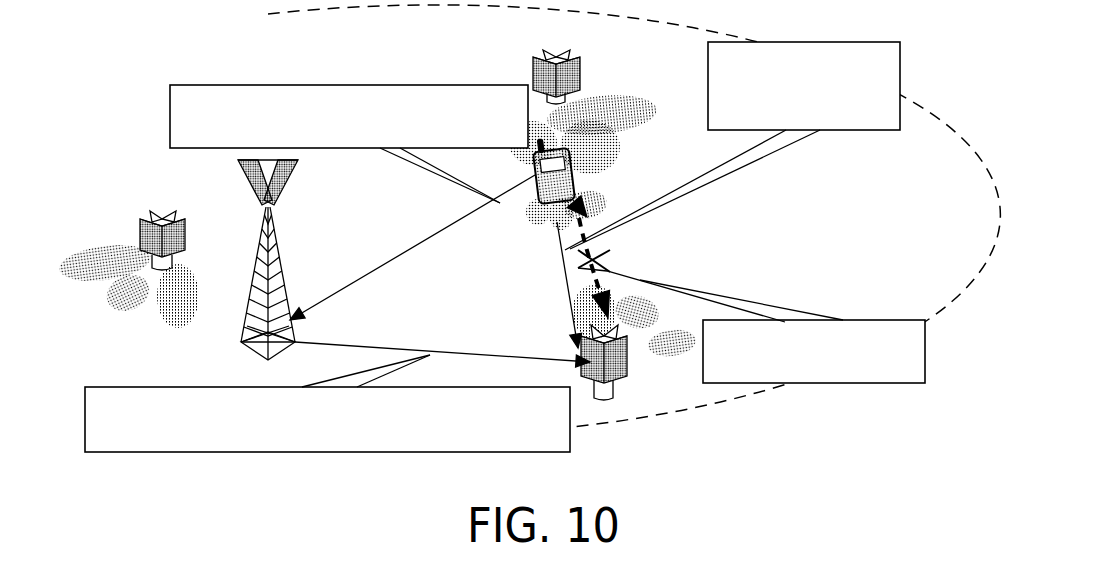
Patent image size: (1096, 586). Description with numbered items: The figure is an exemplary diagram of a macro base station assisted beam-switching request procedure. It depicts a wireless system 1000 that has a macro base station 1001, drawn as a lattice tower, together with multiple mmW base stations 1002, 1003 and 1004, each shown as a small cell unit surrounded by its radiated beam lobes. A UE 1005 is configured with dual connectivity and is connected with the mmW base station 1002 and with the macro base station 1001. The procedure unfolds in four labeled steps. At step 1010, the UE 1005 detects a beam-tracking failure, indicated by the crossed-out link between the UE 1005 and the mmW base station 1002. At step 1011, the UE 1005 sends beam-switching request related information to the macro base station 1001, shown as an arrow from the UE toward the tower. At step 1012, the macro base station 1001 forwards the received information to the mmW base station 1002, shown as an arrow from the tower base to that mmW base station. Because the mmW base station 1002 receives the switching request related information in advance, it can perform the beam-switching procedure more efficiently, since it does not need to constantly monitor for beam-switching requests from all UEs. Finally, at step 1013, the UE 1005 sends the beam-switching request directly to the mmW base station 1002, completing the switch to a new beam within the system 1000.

The wireless system 1000 is at (212, 45).
The macro base station 1001 is at (252, 200).
The mmW base station 1002 is at (607, 372).
The mmW base station 1003 is at (163, 222).
The mmW base station 1004 is at (578, 70).
The UE 1005 is at (577, 175).
The step of detecting beam-tracking failure 1010 is at (797, 351).
The step of sending beam-switching request related information 1011 is at (221, 116).
The step of forwarding the received information 1012 is at (146, 417).
The step of sending the beam-switching request 1013 is at (790, 74).